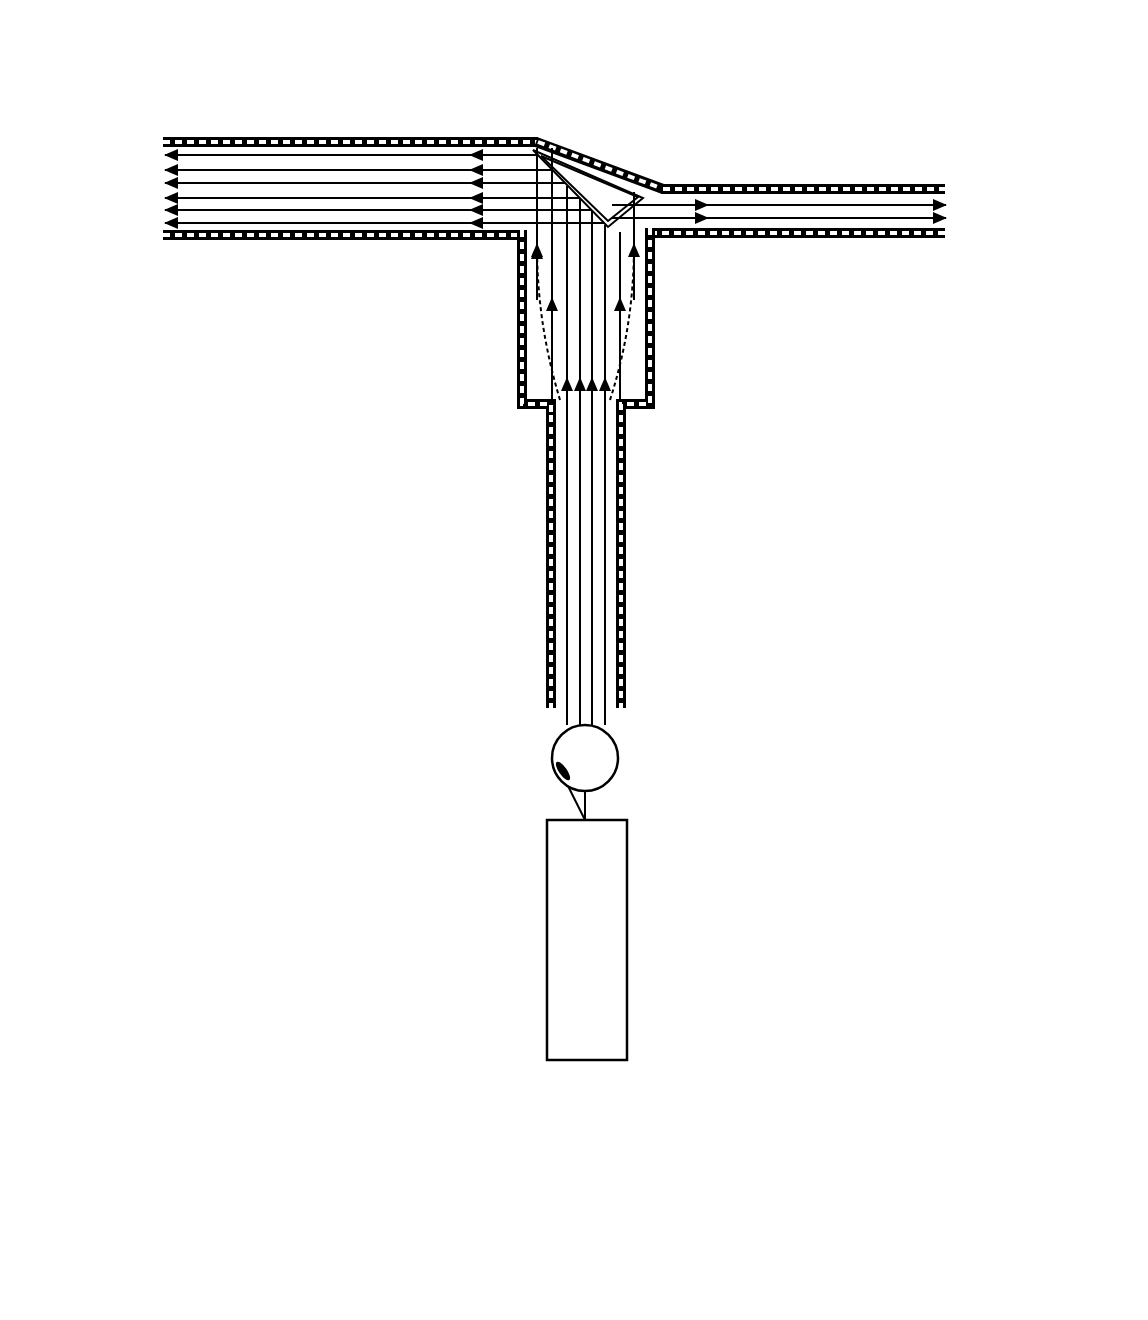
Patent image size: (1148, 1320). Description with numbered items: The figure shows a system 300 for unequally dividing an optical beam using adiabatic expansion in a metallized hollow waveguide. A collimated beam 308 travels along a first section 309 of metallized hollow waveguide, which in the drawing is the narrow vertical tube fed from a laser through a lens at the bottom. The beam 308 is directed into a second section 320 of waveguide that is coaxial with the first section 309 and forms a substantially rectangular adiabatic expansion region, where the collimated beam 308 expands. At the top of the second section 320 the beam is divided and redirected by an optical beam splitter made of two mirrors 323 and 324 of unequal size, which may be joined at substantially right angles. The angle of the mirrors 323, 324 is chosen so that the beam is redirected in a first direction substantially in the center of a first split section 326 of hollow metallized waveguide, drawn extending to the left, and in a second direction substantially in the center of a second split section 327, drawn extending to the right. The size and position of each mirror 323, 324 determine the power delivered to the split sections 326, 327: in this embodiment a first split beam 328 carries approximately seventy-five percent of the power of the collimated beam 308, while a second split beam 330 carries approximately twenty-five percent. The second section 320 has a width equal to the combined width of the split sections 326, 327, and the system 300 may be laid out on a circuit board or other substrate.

The system 300 is at (186, 124).
The first split section 326 is at (371, 131).
The mirror 324 is at (567, 150).
The mirror 323 is at (633, 172).
The second split section 327 is at (804, 164).
The first split beam 328 is at (387, 155).
The second section 320 is at (506, 305).
The second split beam 330 is at (783, 205).
The collimated beam 308 is at (605, 560).
The first section 309 is at (518, 684).